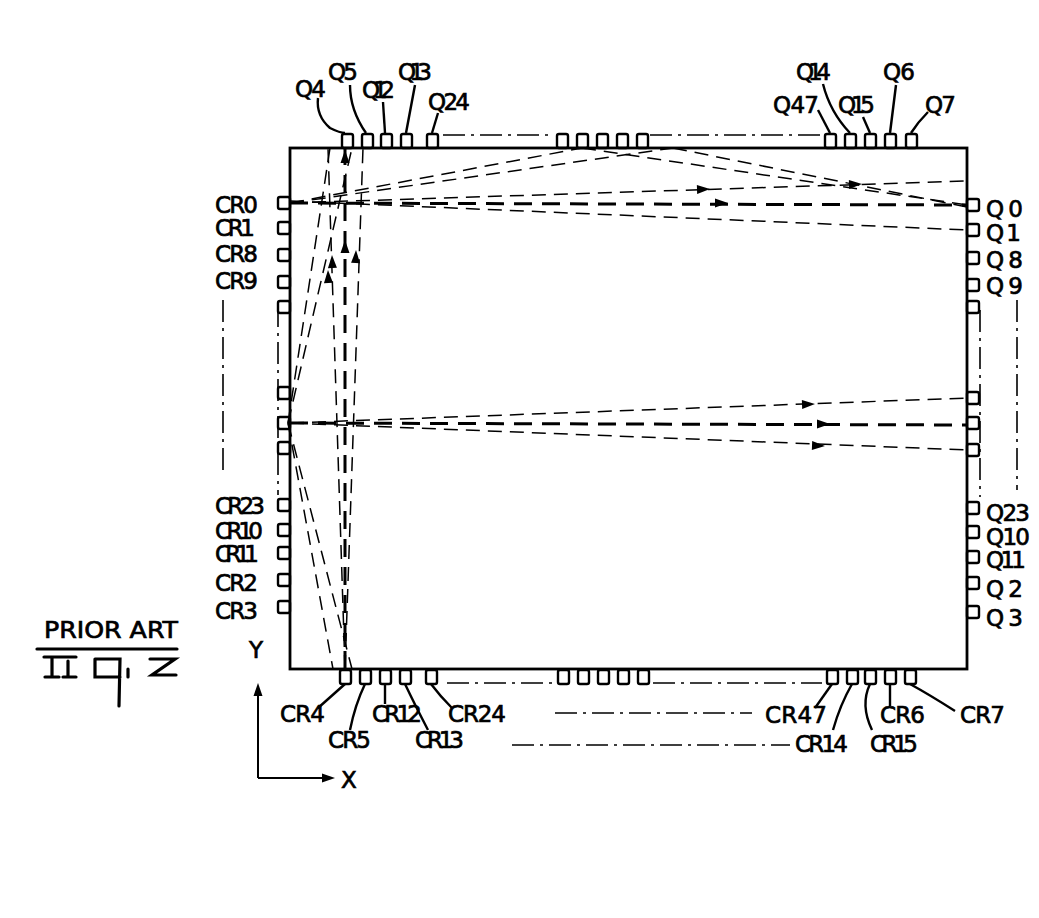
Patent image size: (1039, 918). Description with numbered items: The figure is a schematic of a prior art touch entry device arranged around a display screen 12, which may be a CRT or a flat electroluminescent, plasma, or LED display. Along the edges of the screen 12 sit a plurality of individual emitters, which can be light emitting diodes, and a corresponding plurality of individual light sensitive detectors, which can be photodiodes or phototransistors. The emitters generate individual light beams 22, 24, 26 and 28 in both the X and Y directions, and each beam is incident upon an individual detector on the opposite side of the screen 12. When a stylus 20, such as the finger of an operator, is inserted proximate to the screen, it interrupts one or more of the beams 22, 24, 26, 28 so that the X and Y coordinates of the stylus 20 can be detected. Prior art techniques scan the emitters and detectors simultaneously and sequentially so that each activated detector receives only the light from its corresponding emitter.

The display screen 12 is at (955, 193).
The stylus 20 is at (290, 148).
The individual light beam 22 is at (603, 205).
The individual light beam 24 is at (577, 190).
The individual light beam 26 is at (503, 172).
The individual light beam 28 is at (415, 177).